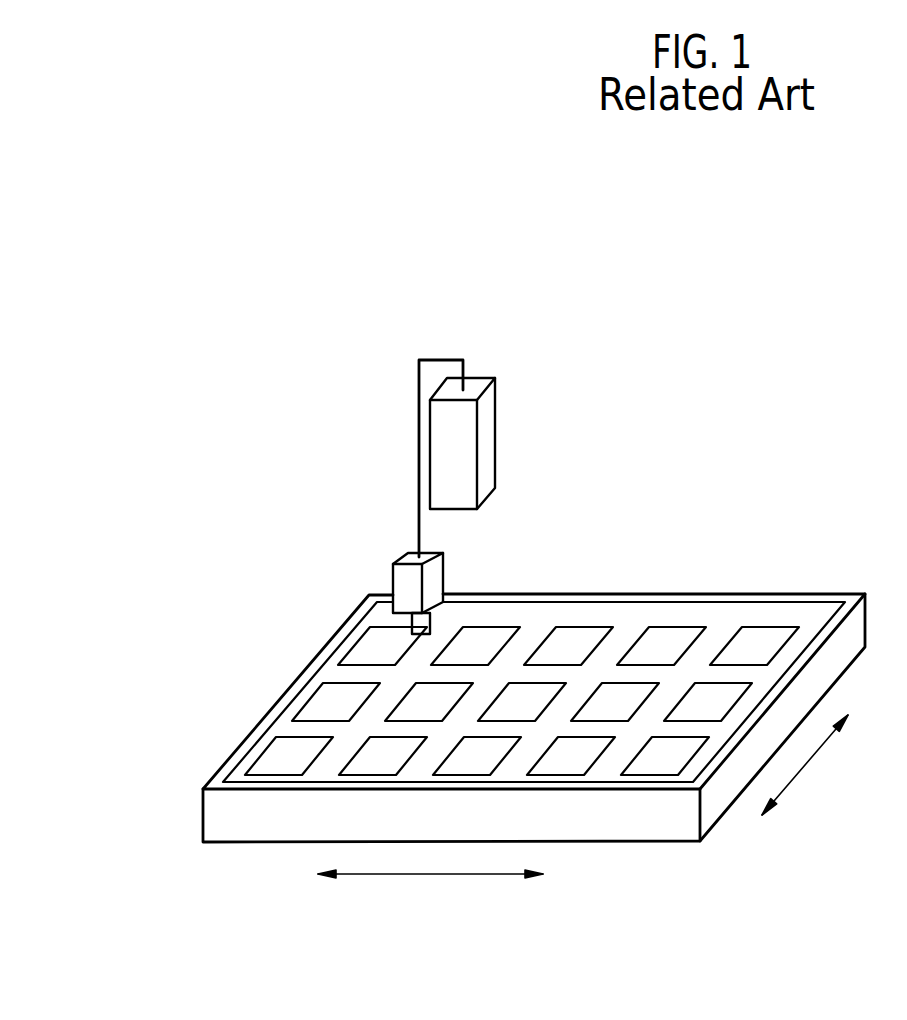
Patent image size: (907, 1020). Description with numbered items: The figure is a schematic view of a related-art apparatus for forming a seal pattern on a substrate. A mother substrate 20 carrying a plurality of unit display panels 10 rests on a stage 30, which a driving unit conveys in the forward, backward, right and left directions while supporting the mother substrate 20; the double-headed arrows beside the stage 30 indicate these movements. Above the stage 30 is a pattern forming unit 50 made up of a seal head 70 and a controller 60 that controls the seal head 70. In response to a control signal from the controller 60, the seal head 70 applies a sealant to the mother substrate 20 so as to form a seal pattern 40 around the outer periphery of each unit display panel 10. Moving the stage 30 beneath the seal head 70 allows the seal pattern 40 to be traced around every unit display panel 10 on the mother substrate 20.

The unit display panel 10 is at (270, 765).
The mother substrate 20 is at (238, 773).
The stage 30 is at (648, 825).
The seal pattern 40 is at (278, 733).
The pattern forming unit 50 is at (298, 332).
The controller 60 is at (485, 420).
The seal head 70 is at (440, 573).